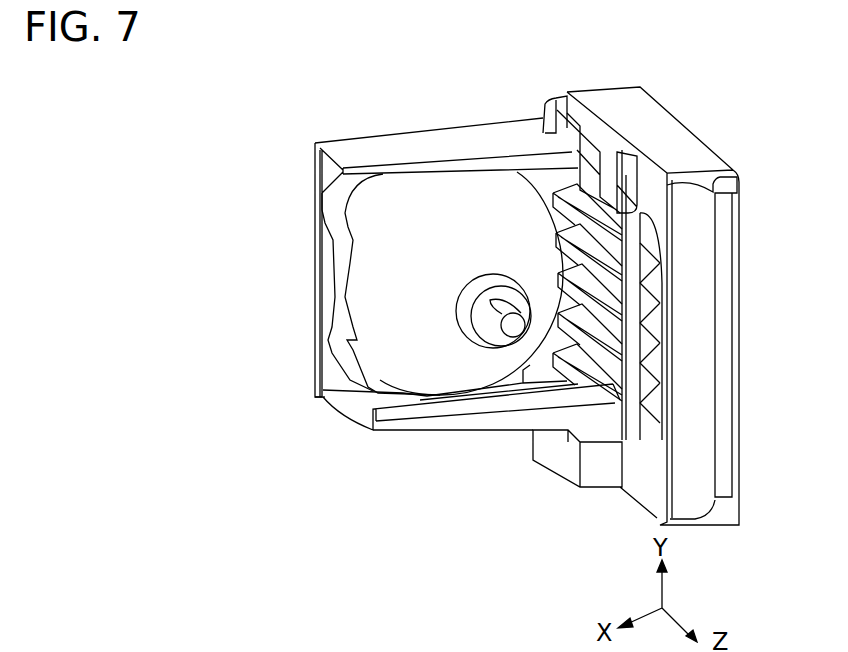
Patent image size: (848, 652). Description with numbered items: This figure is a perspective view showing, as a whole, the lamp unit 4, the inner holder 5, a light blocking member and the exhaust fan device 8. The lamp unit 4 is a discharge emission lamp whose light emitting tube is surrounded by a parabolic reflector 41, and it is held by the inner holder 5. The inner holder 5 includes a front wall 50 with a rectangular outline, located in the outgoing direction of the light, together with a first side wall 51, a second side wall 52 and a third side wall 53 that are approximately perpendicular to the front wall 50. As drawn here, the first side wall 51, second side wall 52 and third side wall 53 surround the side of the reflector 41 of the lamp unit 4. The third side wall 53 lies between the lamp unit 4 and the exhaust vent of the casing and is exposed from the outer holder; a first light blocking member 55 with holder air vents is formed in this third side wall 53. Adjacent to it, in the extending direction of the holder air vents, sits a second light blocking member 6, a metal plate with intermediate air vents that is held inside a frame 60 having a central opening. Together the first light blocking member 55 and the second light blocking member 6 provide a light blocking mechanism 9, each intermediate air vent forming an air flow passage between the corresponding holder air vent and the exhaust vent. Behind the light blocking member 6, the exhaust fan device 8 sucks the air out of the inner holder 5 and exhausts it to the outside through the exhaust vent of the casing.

The lamp unit 4 is at (318, 368).
The inner holder 5 is at (311, 135).
The second light blocking member 6 is at (648, 385).
The exhaust fan device 8 is at (742, 398).
The light blocking mechanism 9 is at (517, 502).
The reflector 41 is at (358, 218).
The front wall 50 is at (318, 274).
The first side wall 51 is at (345, 408).
The second side wall 52 is at (467, 140).
The third side wall 53 is at (565, 108).
The first light blocking member 55 is at (580, 382).
The frame 60 is at (705, 290).